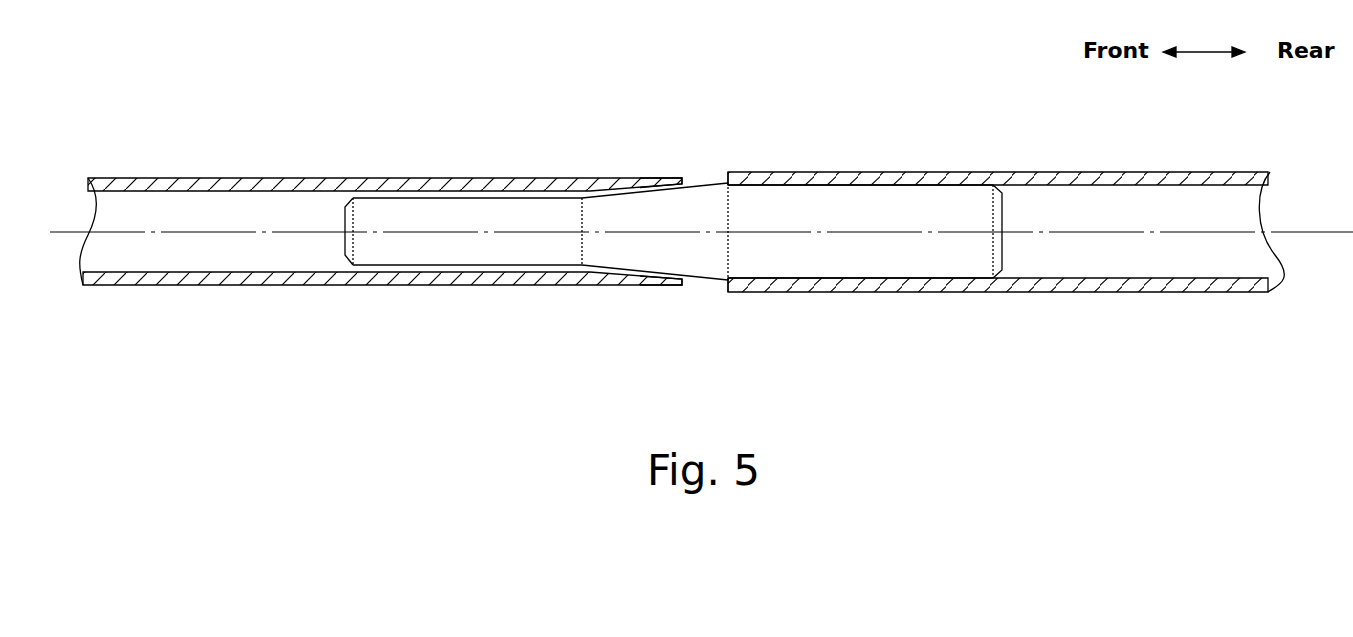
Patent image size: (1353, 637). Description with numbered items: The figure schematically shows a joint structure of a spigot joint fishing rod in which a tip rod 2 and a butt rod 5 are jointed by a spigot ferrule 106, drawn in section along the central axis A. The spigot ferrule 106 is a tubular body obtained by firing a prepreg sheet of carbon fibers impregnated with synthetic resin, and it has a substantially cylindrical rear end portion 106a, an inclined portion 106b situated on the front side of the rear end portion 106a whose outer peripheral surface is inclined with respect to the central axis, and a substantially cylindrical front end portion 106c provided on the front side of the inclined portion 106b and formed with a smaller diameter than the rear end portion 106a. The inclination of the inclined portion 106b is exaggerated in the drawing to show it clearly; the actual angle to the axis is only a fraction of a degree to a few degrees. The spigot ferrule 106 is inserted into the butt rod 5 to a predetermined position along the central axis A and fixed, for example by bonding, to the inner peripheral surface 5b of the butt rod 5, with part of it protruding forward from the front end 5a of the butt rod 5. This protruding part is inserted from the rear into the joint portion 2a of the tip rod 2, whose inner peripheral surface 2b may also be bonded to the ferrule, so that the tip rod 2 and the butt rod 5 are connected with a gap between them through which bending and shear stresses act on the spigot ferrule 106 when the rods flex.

The tip rod 2 is at (208, 172).
The joint portion 2a is at (612, 178).
The inner peripheral surface 2b is at (210, 272).
The butt rod 5 is at (1043, 160).
The front end of rear tube 5a is at (802, 180).
The inner peripheral surface 5b is at (1087, 278).
The spigot ferrule 106 is at (714, 170).
The rear end portion 106a is at (902, 198).
The inclined portion 106b is at (693, 186).
The front end portion 106c is at (487, 212).
The central axis A is at (1306, 232).